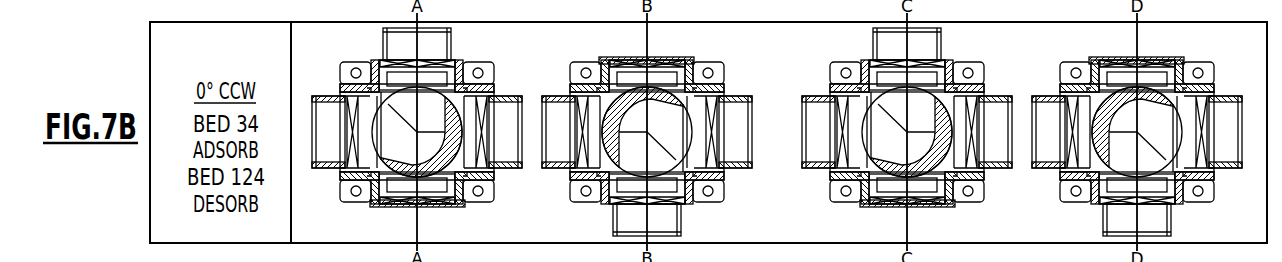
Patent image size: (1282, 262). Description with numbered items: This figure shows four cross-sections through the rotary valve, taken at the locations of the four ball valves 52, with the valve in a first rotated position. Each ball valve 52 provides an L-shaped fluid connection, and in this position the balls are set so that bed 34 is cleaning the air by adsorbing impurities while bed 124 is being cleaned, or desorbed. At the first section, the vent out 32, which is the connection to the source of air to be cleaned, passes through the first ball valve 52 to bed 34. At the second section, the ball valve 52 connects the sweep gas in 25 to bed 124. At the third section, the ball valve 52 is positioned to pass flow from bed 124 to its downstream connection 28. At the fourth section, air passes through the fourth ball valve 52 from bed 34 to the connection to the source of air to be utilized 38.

The sweep gas in 25 is at (662, 217).
The downstream connection 28 is at (890, 50).
The vent out 32 is at (402, 51).
The sorbent bed A 34 is at (318, 146).
The connection to the source of air to be utilized 38 is at (1150, 217).
The ball valve 52 is at (426, 172).
The sorbent bed B 124 is at (503, 152).